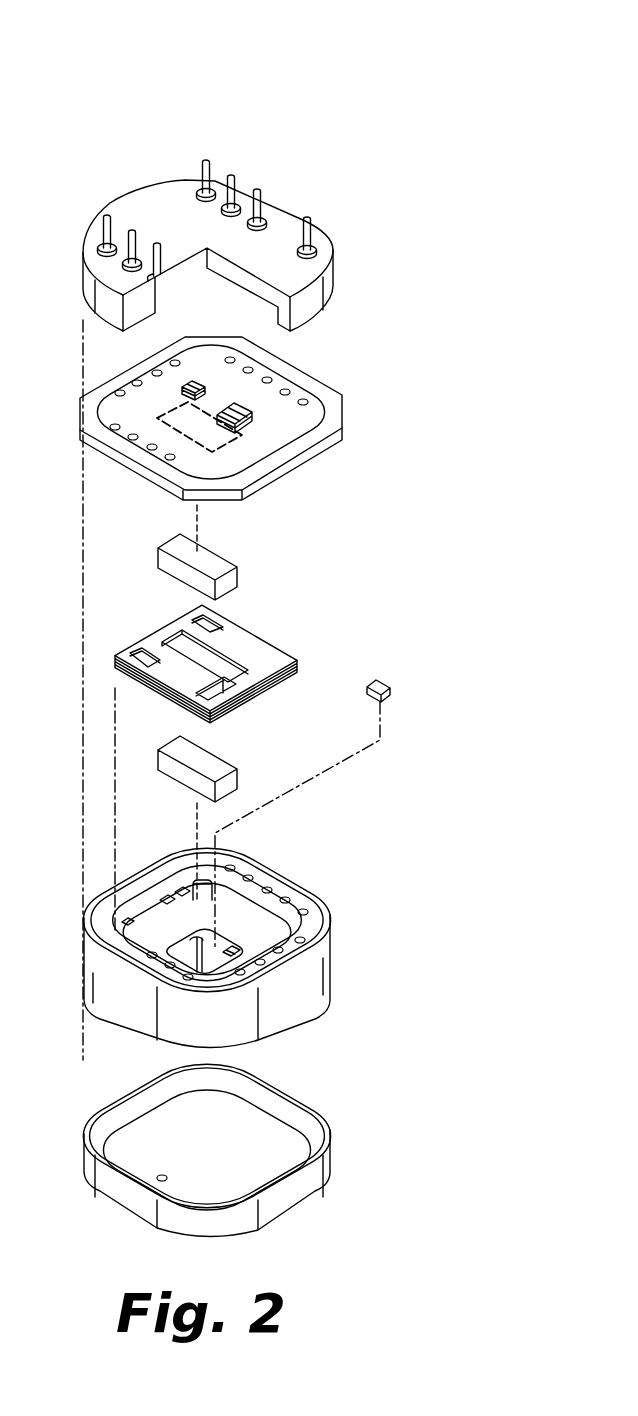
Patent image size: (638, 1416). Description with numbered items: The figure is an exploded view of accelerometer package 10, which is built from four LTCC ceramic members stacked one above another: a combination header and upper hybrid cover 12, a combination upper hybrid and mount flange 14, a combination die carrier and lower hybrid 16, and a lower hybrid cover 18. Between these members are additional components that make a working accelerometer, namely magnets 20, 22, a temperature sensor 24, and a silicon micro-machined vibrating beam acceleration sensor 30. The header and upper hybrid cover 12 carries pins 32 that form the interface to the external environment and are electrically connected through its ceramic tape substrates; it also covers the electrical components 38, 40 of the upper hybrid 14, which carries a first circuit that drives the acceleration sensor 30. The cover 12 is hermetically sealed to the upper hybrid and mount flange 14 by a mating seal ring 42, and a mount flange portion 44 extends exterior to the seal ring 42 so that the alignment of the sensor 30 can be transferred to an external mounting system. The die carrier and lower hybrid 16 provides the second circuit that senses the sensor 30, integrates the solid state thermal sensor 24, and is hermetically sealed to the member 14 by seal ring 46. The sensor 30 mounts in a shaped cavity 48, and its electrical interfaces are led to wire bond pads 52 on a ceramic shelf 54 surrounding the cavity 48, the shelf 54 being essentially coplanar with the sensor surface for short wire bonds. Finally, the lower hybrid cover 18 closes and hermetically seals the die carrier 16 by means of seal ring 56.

The accelerometer package 10 is at (367, 107).
The combination header and upper hybrid cover 12 is at (323, 223).
The combination upper hybrid and mount flange 14 is at (208, 399).
The combination die carrier and lower hybrid 16 is at (219, 929).
The lower hybrid cover 18 is at (244, 1150).
The magnet 20 is at (223, 558).
The magnet 22 is at (223, 762).
The temperature sensor 24 is at (382, 680).
The acceleration sensor 30 is at (252, 635).
The pins 32 is at (213, 166).
The electrical component 38 is at (242, 403).
The electrical component 40 is at (194, 380).
The seal ring 42 is at (325, 428).
The mount flange portion 44 is at (80, 412).
The seal ring 46 is at (328, 913).
The shaped cavity 48 is at (227, 920).
The wire bond pads 52 is at (163, 898).
The ceramic shelf 54 is at (148, 908).
The seal ring 56 is at (325, 1138).